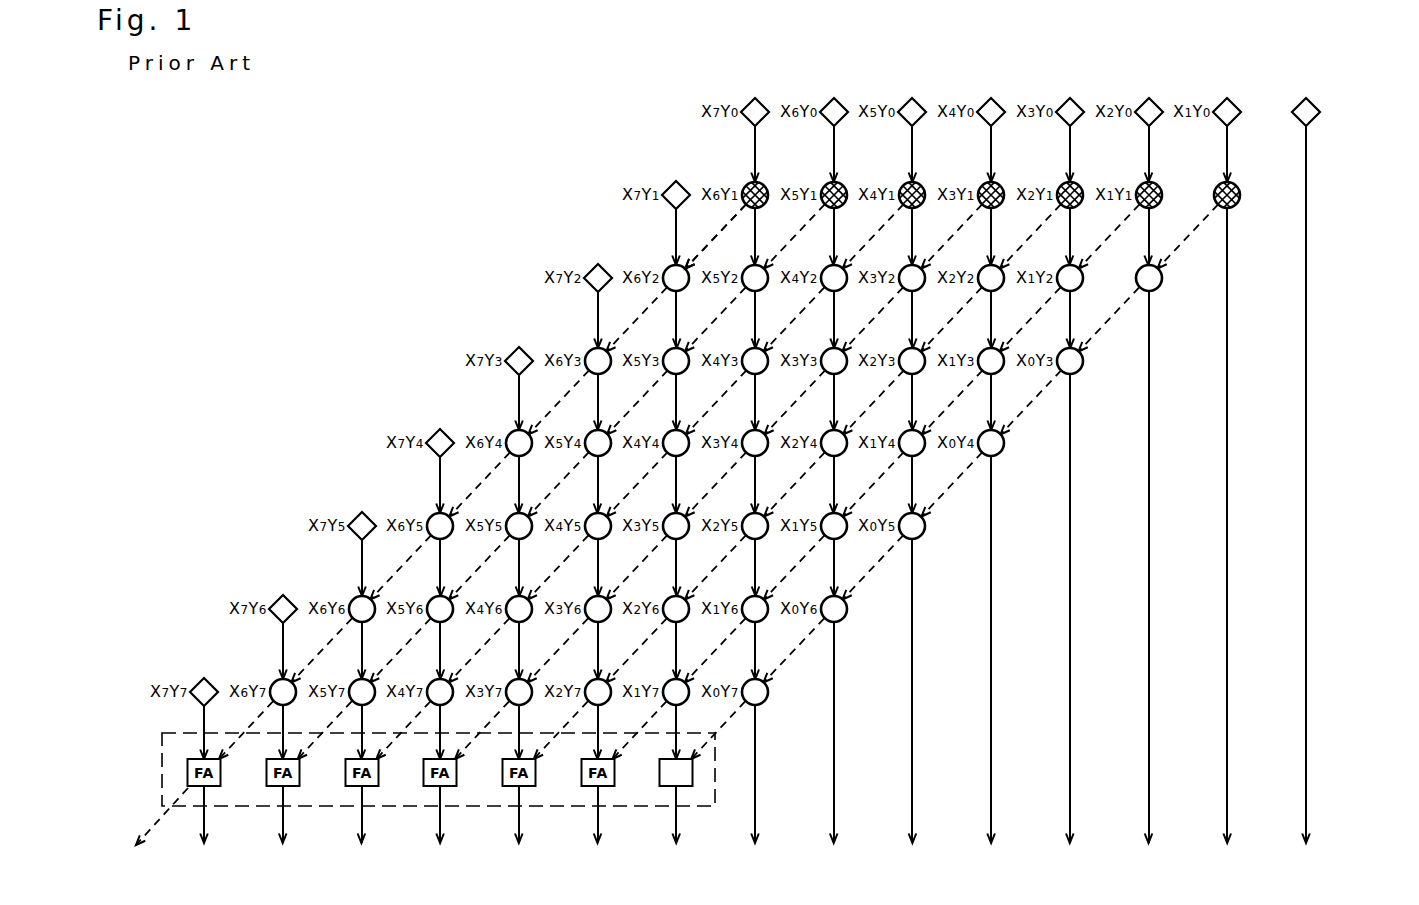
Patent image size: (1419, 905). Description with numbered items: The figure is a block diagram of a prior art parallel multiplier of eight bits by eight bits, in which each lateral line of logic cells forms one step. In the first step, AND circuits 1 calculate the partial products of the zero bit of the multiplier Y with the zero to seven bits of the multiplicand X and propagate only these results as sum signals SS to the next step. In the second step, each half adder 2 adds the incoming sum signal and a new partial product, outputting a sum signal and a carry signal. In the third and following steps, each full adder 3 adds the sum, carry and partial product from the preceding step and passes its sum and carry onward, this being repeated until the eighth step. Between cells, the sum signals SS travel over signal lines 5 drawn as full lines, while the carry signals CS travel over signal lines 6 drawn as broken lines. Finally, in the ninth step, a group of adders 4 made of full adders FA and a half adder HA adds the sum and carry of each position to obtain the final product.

The AND circuit 1 is at (1320, 112).
The half adder 2 is at (1240, 195).
The full adder 3 is at (1162, 278).
The group of adders 4 is at (162, 762).
The signal line 5 is at (752, 150).
The signal line 6 is at (712, 240).